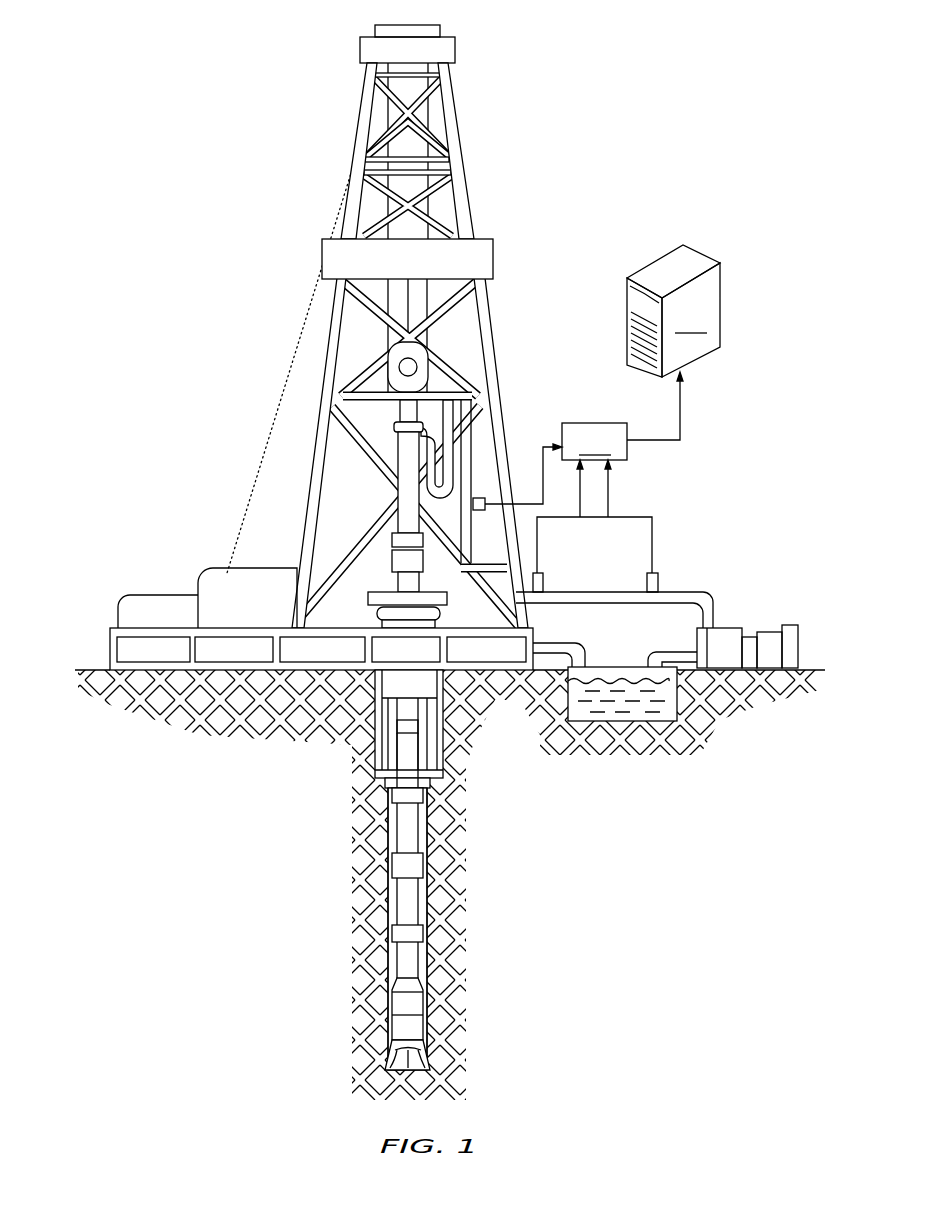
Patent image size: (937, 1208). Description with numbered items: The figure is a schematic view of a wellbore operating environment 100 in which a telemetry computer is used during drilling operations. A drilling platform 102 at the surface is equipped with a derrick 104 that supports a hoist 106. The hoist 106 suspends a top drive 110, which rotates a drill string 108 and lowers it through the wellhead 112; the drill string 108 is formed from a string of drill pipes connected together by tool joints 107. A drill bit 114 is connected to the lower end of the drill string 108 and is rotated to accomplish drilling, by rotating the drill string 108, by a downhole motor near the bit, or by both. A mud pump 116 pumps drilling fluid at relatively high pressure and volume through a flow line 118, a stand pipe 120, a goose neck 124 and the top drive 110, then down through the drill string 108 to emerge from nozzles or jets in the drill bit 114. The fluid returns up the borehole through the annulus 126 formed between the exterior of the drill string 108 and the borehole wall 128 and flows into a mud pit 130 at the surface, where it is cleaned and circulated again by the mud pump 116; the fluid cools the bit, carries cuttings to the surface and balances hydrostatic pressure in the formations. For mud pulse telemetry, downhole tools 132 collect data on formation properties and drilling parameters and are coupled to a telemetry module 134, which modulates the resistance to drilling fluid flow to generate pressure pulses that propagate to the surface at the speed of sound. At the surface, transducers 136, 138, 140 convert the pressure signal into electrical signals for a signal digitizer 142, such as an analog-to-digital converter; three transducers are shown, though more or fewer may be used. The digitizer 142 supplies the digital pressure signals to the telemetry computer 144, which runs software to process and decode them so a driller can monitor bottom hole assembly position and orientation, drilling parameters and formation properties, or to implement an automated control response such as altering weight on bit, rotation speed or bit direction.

The wellbore operating environment 100 is at (428, 562).
The drilling platform 102 is at (110, 648).
The derrick 104 is at (457, 122).
The hoist 106 is at (387, 381).
The tool joints 107 is at (397, 794).
The drill string 108 is at (430, 817).
The top drive 110 is at (402, 447).
The wellhead 112 is at (382, 590).
The drill bit 114 is at (423, 1055).
The mud pump 116 is at (720, 628).
The flow line 118 is at (668, 603).
The stand pipe 120 is at (474, 440).
The goose neck 124 is at (450, 376).
The annulus 126 is at (420, 900).
The borehole wall 128 is at (427, 835).
The mud pit 130 is at (627, 708).
The downhole tools 132 is at (390, 1022).
The telemetry module 134 is at (398, 998).
The transducer 136 is at (478, 497).
The transducer 138 is at (538, 573).
The transducer 140 is at (647, 575).
The signal digitizer 142 is at (622, 444).
The telemetry computer 144 is at (673, 311).